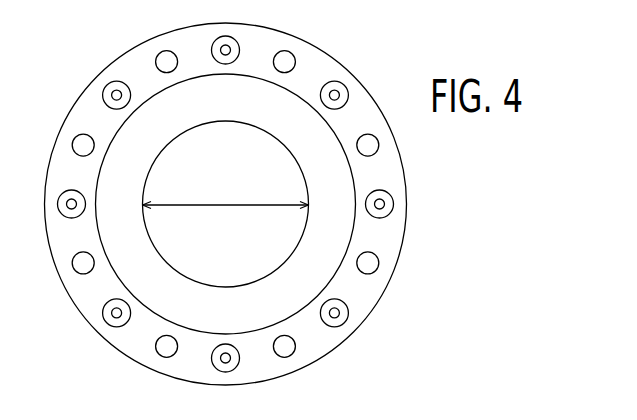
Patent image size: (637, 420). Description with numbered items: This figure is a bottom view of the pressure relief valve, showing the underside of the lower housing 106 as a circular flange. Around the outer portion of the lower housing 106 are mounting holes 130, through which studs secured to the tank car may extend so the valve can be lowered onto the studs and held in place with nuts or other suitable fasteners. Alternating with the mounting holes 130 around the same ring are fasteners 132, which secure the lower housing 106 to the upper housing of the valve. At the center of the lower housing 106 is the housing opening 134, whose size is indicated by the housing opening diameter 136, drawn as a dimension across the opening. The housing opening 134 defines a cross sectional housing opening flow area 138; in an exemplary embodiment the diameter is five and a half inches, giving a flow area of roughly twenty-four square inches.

The lower housing 106 is at (375, 302).
The mounting holes 130 is at (160, 60).
The fasteners 132 is at (370, 217).
The housing opening 134 is at (226, 204).
The housing opening diameter 136 is at (178, 204).
The housing opening flow area 138 is at (240, 252).